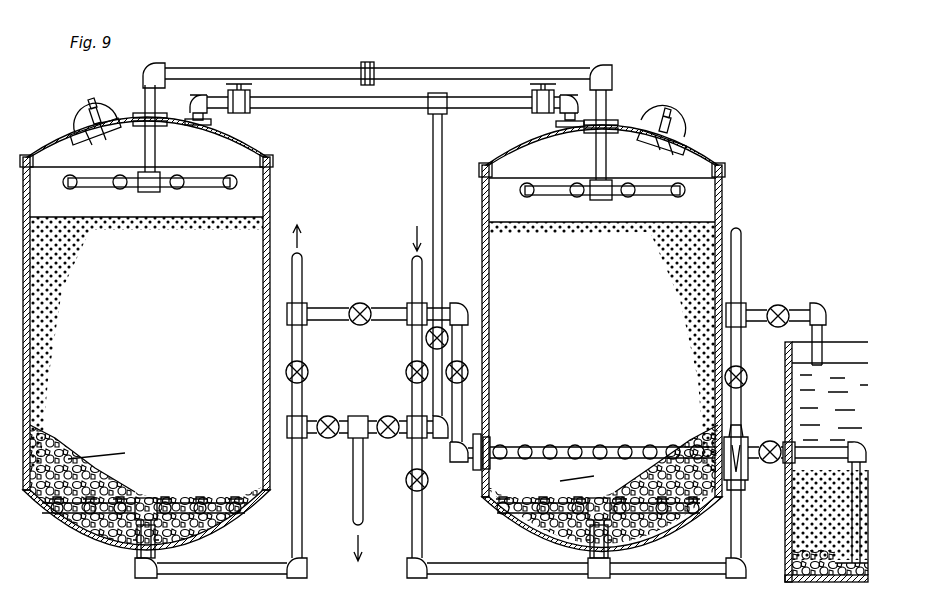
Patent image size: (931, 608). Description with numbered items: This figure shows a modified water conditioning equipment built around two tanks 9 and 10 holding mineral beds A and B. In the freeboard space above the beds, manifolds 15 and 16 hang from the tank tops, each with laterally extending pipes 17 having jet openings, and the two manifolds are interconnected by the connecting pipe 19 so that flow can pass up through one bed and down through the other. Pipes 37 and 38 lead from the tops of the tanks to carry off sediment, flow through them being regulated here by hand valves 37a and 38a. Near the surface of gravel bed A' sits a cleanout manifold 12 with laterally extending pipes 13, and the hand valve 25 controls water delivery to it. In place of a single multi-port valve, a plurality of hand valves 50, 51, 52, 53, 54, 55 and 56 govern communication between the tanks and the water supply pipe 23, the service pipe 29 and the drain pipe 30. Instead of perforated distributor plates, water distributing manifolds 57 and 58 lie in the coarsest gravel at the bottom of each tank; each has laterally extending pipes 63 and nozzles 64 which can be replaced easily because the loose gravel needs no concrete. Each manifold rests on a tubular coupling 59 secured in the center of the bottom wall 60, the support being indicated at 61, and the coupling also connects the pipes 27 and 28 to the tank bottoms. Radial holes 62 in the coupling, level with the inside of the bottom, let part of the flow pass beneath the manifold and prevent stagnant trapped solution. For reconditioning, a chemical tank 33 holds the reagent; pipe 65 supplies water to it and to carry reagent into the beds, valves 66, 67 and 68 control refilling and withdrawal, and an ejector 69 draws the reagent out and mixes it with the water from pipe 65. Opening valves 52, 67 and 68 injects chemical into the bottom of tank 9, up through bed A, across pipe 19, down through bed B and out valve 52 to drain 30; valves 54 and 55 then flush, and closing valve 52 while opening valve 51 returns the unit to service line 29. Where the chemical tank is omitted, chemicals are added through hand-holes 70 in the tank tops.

The tank 9 is at (725, 201).
The tank 10 is at (270, 194).
The cleanout manifold 12 is at (546, 445).
The laterally extending pipes 13 is at (499, 444).
The manifold 15 is at (648, 194).
The manifold 16 is at (193, 188).
The laterally extending pipes 17 is at (74, 188).
The connecting pipe 19 is at (418, 76).
The water supply pipe 23 is at (412, 266).
The hand valve 25 is at (470, 372).
The pipe 27 is at (507, 576).
The pipe 28 is at (238, 576).
The service pipe 29 is at (304, 269).
The drain pipe 30 is at (352, 511).
The brine tank 33 is at (790, 392).
The pipe 37 is at (556, 118).
The hand valve 37a is at (546, 99).
The pipe 38 is at (212, 118).
The hand valve 38a is at (242, 97).
The hand valve 50 is at (366, 306).
The hand valve 51 is at (308, 372).
The hand valve 52 is at (328, 440).
The hand valve 53 is at (388, 440).
The hand valve 54 is at (409, 483).
The hand valve 55 is at (406, 374).
The hand valve 56 is at (428, 342).
The water distributing manifold 57 is at (498, 512).
The water distributing manifold 58 is at (188, 500).
The coupling 59 is at (138, 558).
The bottom wall 60 is at (82, 528).
The manifold support 61 is at (156, 519).
The radial holes 62 is at (165, 543).
The laterally extending pipes 63 is at (240, 512).
The nozzles 64 is at (203, 494).
The pipe 65 is at (742, 266).
The valve 66 is at (782, 307).
The valve 67 is at (744, 372).
The valve 68 is at (772, 441).
The ejector 69 is at (749, 436).
The hand-hole 70 is at (76, 112).